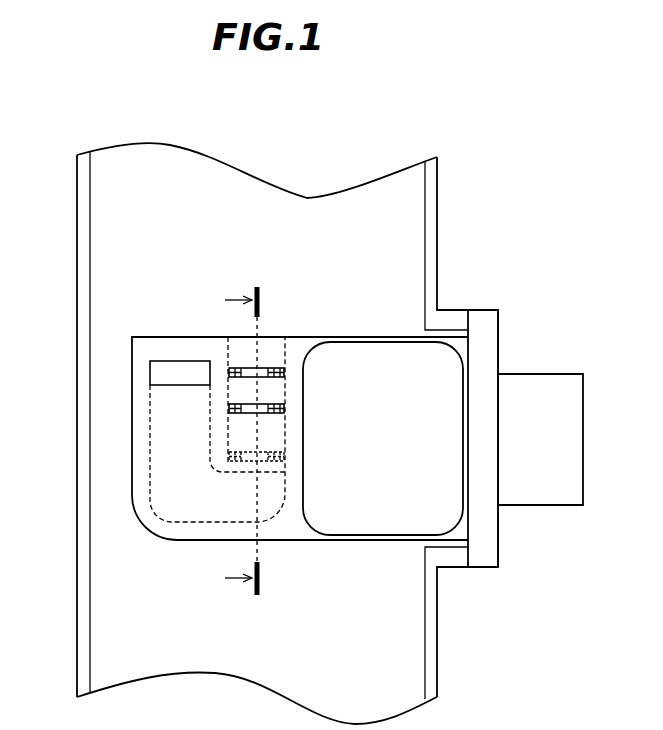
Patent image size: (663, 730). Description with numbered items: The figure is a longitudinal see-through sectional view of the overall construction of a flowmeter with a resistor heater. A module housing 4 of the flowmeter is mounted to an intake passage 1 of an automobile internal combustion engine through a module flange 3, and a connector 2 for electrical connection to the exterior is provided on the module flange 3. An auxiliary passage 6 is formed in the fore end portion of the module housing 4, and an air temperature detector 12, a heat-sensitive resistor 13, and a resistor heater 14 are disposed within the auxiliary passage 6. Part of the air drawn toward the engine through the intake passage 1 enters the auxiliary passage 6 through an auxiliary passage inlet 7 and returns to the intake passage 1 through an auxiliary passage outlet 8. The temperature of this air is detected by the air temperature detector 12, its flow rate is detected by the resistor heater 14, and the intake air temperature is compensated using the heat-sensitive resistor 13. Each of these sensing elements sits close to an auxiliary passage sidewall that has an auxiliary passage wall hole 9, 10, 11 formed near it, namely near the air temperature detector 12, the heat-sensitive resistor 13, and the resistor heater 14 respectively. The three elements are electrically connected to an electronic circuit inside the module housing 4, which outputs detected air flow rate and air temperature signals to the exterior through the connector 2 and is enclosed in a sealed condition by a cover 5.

The intake passage 1 is at (374, 210).
The connector 2 is at (552, 372).
The module flange 3 is at (500, 333).
The module housing 4 is at (352, 336).
The cover 5 is at (428, 366).
The auxiliary passage 6 is at (176, 505).
The auxiliary passage inlet 7 is at (272, 335).
The auxiliary passage outlet 8 is at (165, 372).
The auxiliary passage wall hole 9 is at (289, 372).
The auxiliary passage wall hole 10 is at (289, 408).
The auxiliary passage wall hole 11 is at (289, 456).
The air temperature detector 12 is at (248, 366).
The heat-sensitive resistor 13 is at (247, 413).
The resistor heater 14 is at (246, 466).